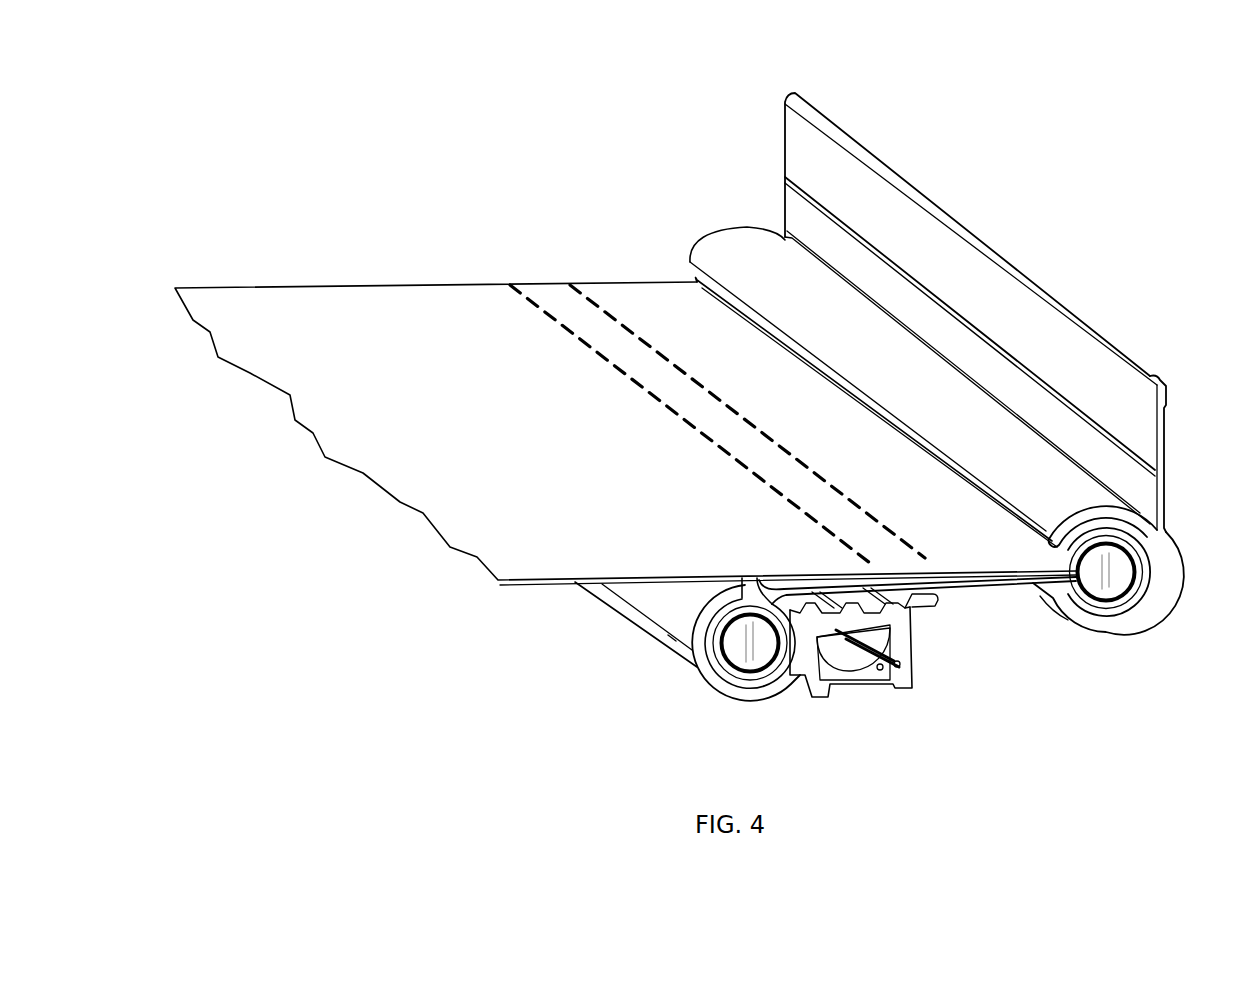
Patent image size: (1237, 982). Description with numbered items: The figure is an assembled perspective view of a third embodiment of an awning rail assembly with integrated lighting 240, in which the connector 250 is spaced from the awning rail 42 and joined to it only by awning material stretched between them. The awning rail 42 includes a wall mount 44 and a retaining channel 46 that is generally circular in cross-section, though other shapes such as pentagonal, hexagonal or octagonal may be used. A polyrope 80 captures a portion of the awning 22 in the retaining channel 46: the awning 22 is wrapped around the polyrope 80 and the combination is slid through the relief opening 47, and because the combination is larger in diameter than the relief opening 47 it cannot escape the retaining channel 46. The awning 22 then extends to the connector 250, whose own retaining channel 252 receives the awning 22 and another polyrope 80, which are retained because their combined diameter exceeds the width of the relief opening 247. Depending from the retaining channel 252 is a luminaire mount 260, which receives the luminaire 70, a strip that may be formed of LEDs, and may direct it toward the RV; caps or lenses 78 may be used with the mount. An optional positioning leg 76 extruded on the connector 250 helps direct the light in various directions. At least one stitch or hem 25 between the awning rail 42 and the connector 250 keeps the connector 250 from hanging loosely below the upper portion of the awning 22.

The sunshade assembly 240 is at (364, 106).
The awning 22 is at (345, 318).
The stitch or hem 25 is at (553, 258).
The retaining channel 46 is at (745, 243).
The awning rail 42 is at (1025, 222).
The wall mount 44 is at (1166, 450).
The relief opening 47 is at (1030, 595).
The polyrope 80 is at (1120, 580).
The relief opening 247 is at (755, 575).
The connector 250 is at (700, 716).
The retaining channel 252 is at (655, 632).
The luminaire mount 260 is at (935, 662).
The positioning leg 76 is at (932, 598).
The luminaire 70 is at (858, 673).
The caps or lenses 78 is at (868, 690).